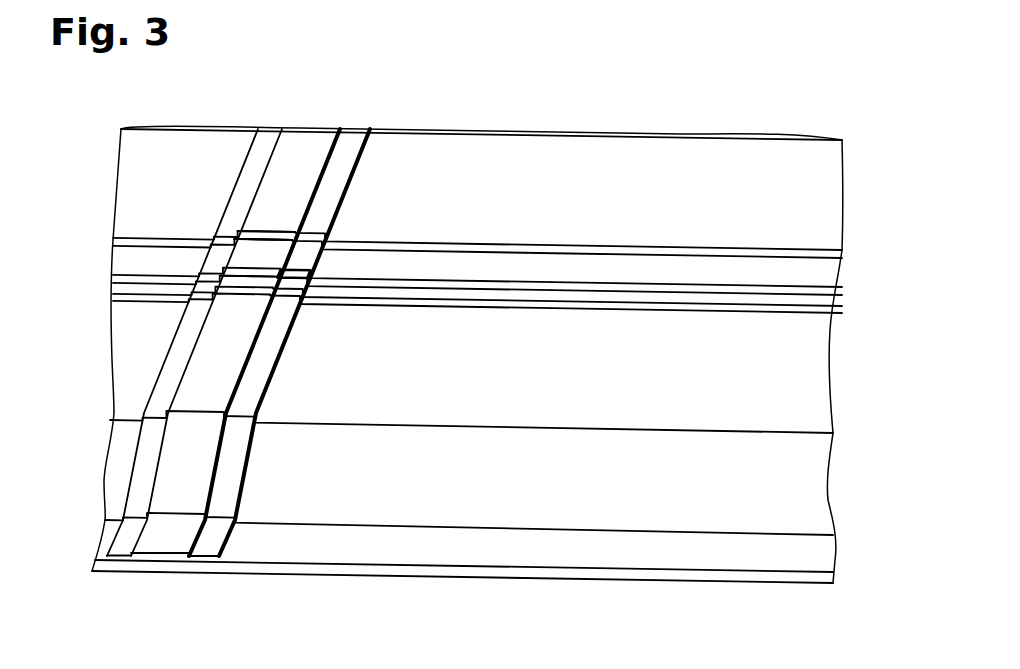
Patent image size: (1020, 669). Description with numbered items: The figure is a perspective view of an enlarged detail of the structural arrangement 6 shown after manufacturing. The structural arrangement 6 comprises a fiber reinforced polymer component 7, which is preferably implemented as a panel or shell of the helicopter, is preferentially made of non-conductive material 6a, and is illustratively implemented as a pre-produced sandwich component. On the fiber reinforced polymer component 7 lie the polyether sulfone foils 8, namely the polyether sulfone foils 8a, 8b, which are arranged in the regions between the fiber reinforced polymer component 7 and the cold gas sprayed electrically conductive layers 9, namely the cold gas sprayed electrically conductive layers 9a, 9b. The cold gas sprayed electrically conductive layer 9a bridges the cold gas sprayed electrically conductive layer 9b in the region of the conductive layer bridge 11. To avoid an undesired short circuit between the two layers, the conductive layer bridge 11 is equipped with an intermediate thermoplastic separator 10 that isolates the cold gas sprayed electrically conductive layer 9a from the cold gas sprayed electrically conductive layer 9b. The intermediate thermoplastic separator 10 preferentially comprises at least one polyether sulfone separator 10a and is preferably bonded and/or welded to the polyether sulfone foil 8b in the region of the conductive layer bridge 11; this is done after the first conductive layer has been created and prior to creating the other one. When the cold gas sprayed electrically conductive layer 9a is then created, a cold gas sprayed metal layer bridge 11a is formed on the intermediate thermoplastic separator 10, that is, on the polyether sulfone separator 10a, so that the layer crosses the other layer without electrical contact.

The structural arrangement 6 is at (773, 117).
The non-conductive material 6a is at (645, 168).
The fiber reinforced polymer component 7 is at (625, 588).
The first conductor track 8 is at (356, 132).
The polyether sulfone foil 8a is at (808, 299).
The polyether sulfone foil 8b is at (240, 195).
The second conductor track 9 is at (318, 128).
The cold gas sprayed electrically conductive layer 9a is at (543, 257).
The cold gas sprayed electrically conductive layer 9b is at (172, 532).
The intermediate thermoplastic separator 10 is at (273, 214).
The polyether sulfone separator 10a is at (250, 282).
The conductive layer bridge 11 is at (305, 266).
The cold gas sprayed metal layer bridge 11a is at (243, 257).